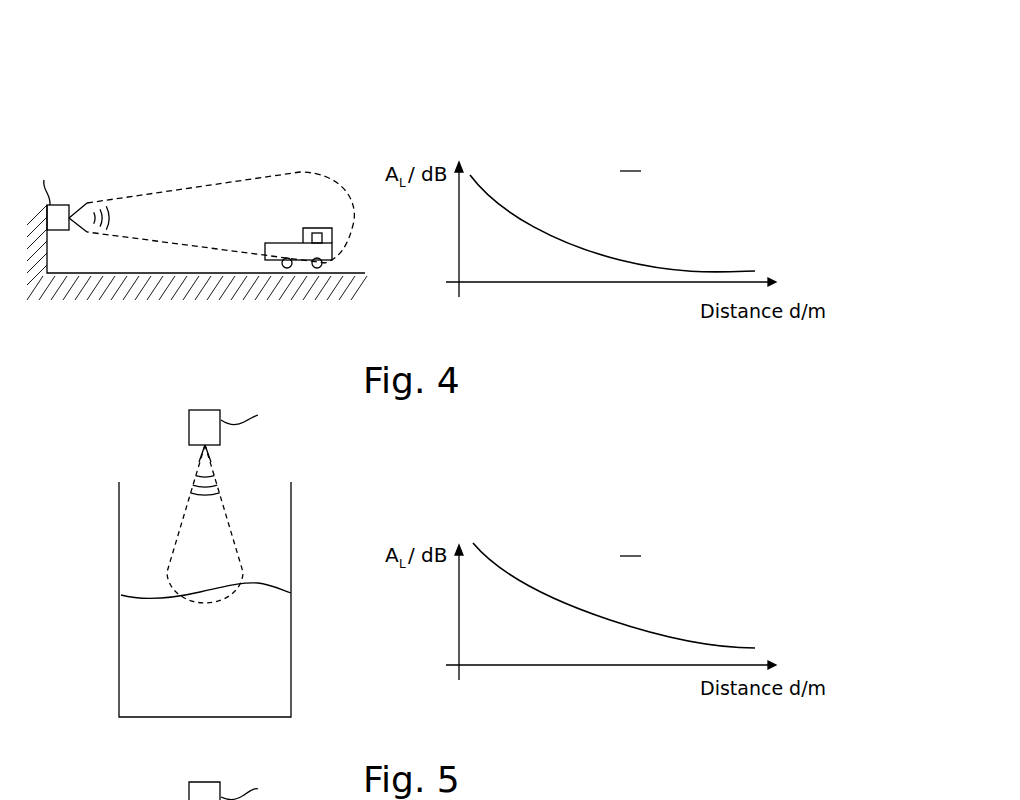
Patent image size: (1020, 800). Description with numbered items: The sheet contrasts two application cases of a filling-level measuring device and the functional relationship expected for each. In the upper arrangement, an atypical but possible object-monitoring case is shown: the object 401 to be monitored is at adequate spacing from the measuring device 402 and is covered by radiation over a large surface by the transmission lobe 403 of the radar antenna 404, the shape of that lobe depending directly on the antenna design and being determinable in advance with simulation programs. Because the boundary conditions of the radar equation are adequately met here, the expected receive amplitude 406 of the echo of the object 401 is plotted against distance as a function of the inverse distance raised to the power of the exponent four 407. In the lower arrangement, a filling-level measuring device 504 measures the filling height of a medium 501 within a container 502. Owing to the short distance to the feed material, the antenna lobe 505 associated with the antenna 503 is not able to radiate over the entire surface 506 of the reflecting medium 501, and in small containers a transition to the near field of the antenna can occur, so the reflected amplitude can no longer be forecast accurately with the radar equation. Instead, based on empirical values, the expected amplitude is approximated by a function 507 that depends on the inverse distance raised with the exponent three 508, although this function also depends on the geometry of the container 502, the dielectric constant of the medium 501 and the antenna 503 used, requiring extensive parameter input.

In FIG. 4, the object 401 is at (283, 240).
In FIG. 4, the measuring device 402 is at (60, 205).
In FIG. 4, the transmission lobe 403 is at (302, 172).
In FIG. 4, the radar antenna 404 is at (85, 205).
In FIG. 4, the expected receive amplitude function 406 is at (700, 270).
In FIG. 4, the exponent four 407 is at (637, 145).
In FIG. 5, the medium 501 is at (135, 663).
In FIG. 5, the container 502 is at (291, 683).
In FIG. 5, the antenna 503 is at (215, 453).
In FIG. 5, the filling-level measuring device 504 is at (205, 410).
In FIG. 5, the antenna lobe 505 is at (182, 510).
In FIG. 5, the surface 506 is at (270, 585).
In FIG. 5, the function 507 is at (700, 640).
In FIG. 5, the exponent three 508 is at (637, 530).